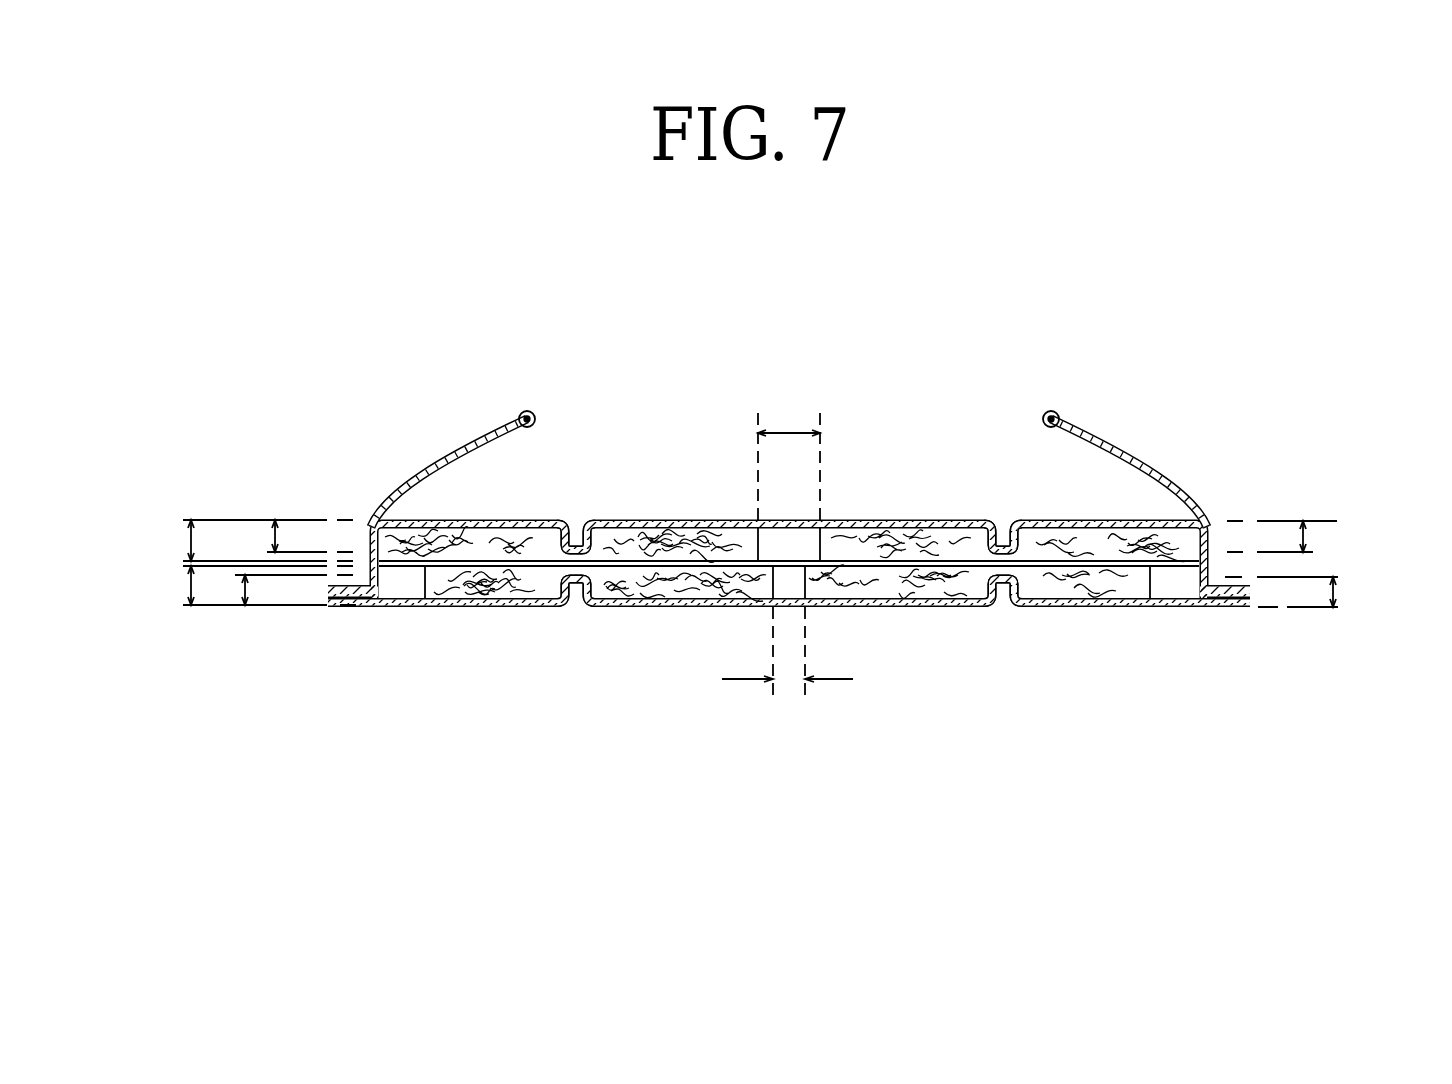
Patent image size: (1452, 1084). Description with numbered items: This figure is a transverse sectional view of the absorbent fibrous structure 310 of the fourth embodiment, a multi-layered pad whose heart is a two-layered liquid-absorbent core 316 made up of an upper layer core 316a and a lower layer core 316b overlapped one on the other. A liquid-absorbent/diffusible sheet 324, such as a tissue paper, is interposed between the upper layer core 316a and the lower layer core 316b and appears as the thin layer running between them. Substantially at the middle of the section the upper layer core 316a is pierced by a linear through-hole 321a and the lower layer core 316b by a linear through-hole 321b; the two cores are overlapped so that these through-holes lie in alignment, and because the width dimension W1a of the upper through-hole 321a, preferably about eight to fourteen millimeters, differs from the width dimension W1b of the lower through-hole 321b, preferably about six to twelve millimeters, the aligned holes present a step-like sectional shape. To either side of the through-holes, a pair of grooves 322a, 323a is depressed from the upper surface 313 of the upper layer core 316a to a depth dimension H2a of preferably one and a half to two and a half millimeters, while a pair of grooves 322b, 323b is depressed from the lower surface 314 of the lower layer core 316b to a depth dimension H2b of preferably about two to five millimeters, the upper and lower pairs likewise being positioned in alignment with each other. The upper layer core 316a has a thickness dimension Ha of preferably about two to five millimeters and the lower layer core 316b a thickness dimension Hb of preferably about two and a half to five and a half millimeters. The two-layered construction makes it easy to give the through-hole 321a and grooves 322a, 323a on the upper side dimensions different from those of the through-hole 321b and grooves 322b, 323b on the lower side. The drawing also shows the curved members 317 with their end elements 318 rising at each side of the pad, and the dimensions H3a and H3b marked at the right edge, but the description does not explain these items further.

The absorbent fibrous structure 310 is at (1005, 315).
The upper surface 313 is at (885, 520).
The lower surface 314 is at (901, 607).
The liquid-absorbent core 316 is at (447, 588).
The upper layer core 316a is at (493, 545).
The lower layer core 316b is at (641, 575).
The arm 317 is at (430, 468).
The hook 318 is at (527, 410).
The linear through-hole 321a is at (775, 543).
The linear through-hole 321b is at (780, 585).
The groove 322a is at (574, 522).
The groove 322b is at (576, 607).
The groove 323a is at (1003, 530).
The groove 323b is at (1003, 610).
The liquid-absorbent/diffusible sheet 324 is at (1103, 567).
The thickness dimension Ha is at (191, 540).
The thickness dimension Hb is at (191, 590).
The depth dimension H2a is at (273, 543).
The depth dimension H2b is at (243, 590).
The height H3a is at (1306, 532).
The height H3b is at (1340, 586).
The width dimension W1a is at (797, 432).
The width dimension W1b is at (790, 680).